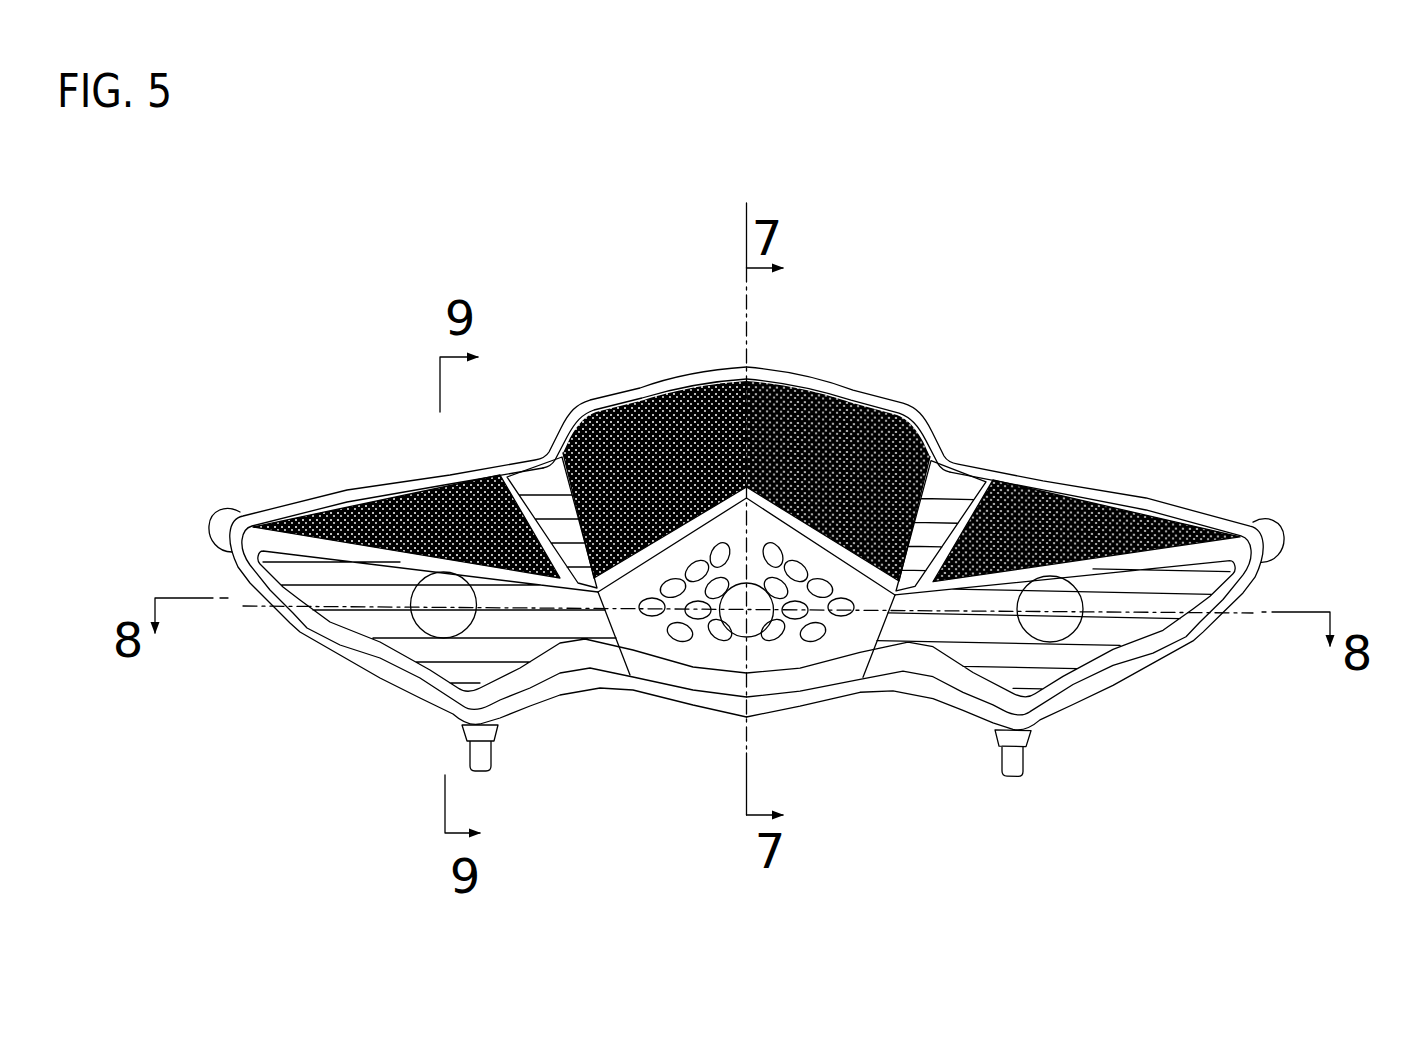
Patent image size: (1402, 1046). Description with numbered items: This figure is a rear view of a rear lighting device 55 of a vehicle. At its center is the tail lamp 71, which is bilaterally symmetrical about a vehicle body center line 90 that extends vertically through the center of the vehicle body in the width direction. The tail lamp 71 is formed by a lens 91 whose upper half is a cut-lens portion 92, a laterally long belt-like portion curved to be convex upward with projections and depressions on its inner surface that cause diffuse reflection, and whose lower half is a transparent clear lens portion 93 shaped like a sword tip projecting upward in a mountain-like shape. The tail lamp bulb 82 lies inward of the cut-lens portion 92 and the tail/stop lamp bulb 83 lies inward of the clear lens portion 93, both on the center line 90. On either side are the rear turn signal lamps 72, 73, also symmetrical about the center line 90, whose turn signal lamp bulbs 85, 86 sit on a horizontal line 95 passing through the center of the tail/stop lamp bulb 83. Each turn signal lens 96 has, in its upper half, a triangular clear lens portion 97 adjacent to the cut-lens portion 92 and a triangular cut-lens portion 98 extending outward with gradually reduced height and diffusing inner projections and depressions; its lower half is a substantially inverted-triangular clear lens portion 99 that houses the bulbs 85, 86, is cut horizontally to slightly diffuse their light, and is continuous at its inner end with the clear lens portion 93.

The rear combination lamp 55 is at (355, 360).
The tail lamp 71 is at (654, 382).
The rear turn signal lamp 72 is at (276, 505).
The rear turn signal lamp 73 is at (1214, 512).
The tail lamp bulb 82 is at (776, 420).
The tail/stop lamp bulb 83 is at (722, 634).
The turn signal lamp bulb 85 is at (415, 632).
The turn signal lamp bulb 86 is at (1078, 633).
The vehicle body center line 90 is at (740, 210).
The lens 91 is at (690, 380).
The cut-lens portion 92 is at (903, 474).
The clear lens portion 93 is at (795, 643).
The horizontal line 95 is at (643, 612).
The lens 96 is at (347, 490).
The clear lens portion 97 is at (532, 470).
The cut-lens portion 98 is at (418, 505).
The clear lens portion 99 is at (513, 655).